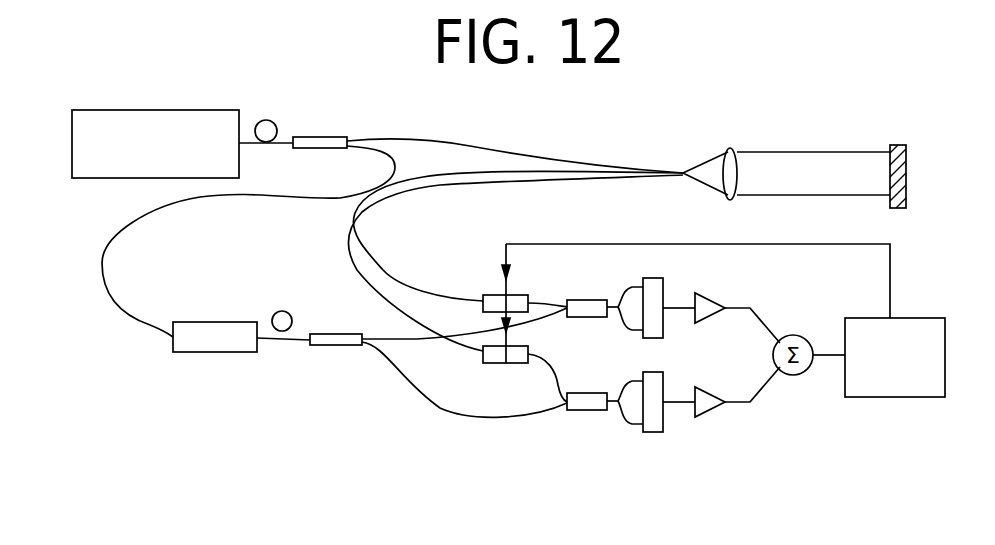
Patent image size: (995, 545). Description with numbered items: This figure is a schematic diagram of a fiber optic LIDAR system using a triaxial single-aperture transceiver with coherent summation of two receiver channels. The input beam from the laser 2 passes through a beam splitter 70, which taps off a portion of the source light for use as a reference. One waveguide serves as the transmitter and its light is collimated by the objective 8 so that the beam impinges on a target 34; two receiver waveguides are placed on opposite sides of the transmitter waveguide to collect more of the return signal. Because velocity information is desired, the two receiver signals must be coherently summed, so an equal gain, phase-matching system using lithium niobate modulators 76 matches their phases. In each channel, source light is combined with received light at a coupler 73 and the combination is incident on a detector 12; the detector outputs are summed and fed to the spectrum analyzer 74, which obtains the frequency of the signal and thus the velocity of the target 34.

The laser 2 is at (166, 154).
The beam splitter 70 is at (316, 137).
The objective 8 is at (737, 140).
The target 34 is at (902, 143).
The lithium niobate modulators 76 is at (500, 295).
The coupler 73 is at (588, 317).
The detector 12 is at (655, 292).
The spectrum analyzer 74 is at (878, 366).